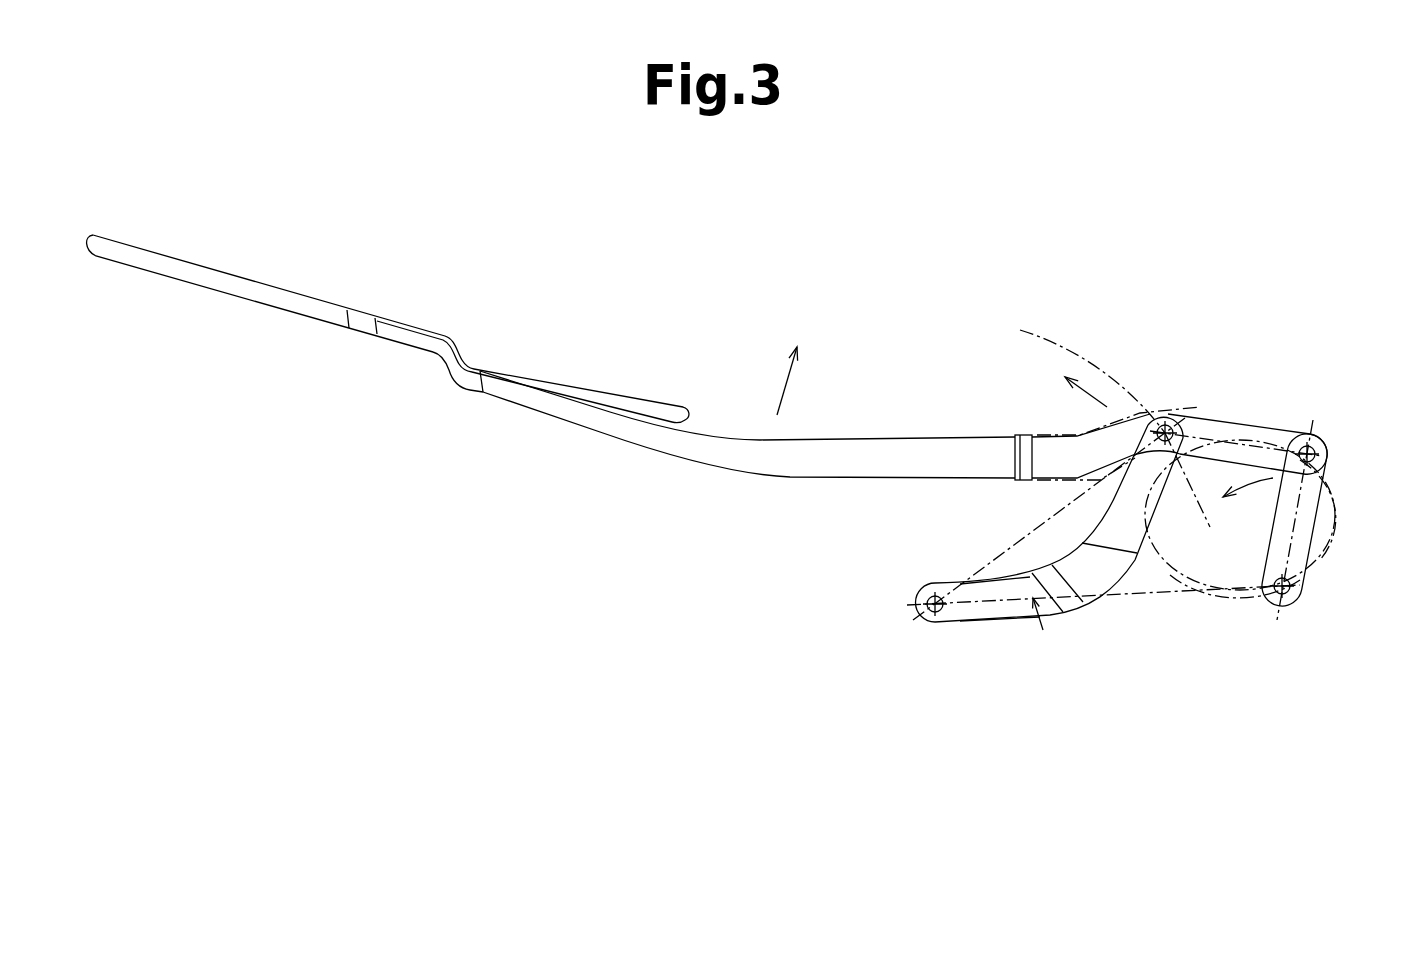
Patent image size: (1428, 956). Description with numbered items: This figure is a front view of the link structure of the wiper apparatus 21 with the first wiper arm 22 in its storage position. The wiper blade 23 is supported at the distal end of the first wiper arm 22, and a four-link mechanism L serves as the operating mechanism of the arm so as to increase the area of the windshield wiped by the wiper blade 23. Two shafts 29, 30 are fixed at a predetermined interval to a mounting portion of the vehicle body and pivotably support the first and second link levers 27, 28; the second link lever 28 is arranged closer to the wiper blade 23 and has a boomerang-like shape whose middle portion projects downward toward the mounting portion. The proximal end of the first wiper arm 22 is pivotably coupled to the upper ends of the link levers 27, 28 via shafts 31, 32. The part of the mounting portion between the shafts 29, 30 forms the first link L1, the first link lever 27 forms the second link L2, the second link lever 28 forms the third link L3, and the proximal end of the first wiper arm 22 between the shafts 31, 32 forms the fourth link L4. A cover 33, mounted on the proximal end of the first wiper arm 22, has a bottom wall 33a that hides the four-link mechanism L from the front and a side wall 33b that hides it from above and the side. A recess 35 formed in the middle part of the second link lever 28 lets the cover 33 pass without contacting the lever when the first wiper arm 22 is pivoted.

The wiper apparatus 21 is at (885, 438).
The first wiper arm 22 is at (1050, 443).
The wiper blade 23 is at (258, 284).
The first link lever 27 is at (1300, 565).
The second link lever 28 is at (983, 615).
The shaft 29 is at (1295, 602).
The shaft 30 is at (940, 620).
The shaft 31 is at (1333, 447).
The shaft 32 is at (1172, 411).
The cover 33 is at (1170, 577).
The bottom wall 33a is at (1207, 593).
The side wall 33b is at (1360, 497).
The recess 35 is at (1112, 577).
The four-link mechanism L is at (1042, 635).
The first link L1 is at (1243, 590).
The second link L2 is at (1337, 481).
The third link L3 is at (997, 558).
The fourth link L4 is at (1228, 442).